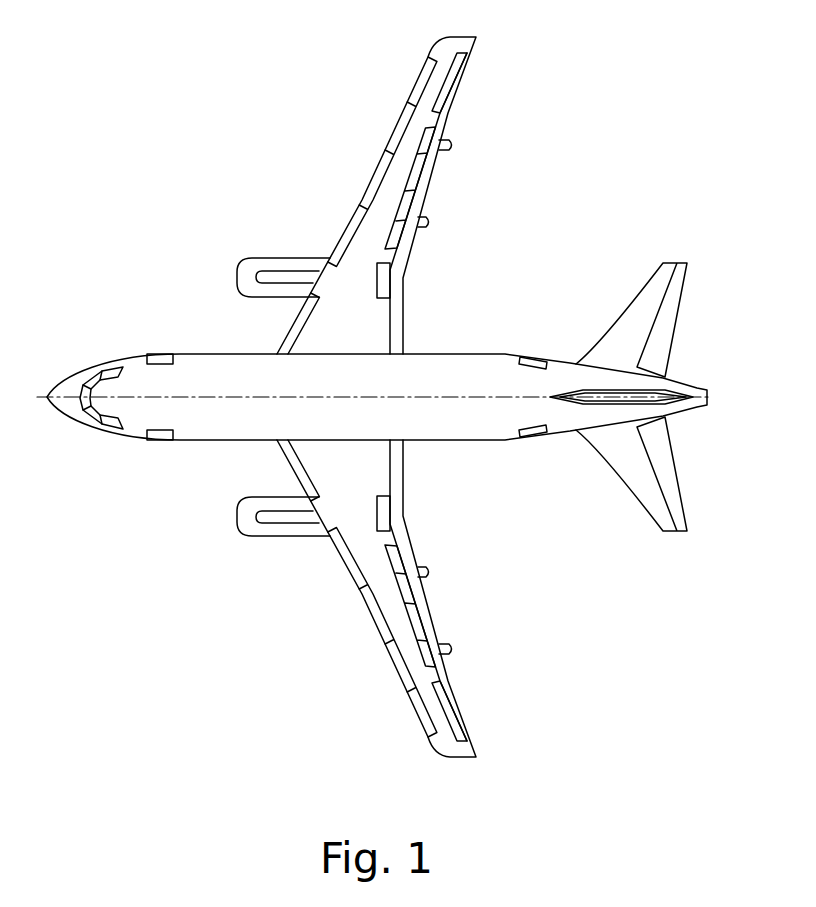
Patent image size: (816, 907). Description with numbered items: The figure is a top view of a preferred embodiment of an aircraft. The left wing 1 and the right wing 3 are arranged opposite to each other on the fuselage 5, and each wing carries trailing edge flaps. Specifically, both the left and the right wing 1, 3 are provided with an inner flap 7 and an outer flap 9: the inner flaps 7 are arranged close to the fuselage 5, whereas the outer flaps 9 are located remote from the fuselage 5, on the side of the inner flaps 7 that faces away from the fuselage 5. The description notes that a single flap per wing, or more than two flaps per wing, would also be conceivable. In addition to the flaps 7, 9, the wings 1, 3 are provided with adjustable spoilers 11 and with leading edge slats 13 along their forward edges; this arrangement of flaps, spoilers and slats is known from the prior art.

The left wing 1 is at (358, 523).
The right wing 3 is at (383, 178).
The fuselage 5 is at (215, 372).
The inner flap 7 is at (397, 312).
The outer flap 9 is at (420, 195).
The adjustable spoiler 11 is at (430, 137).
The leading edge slat 13 is at (360, 200).